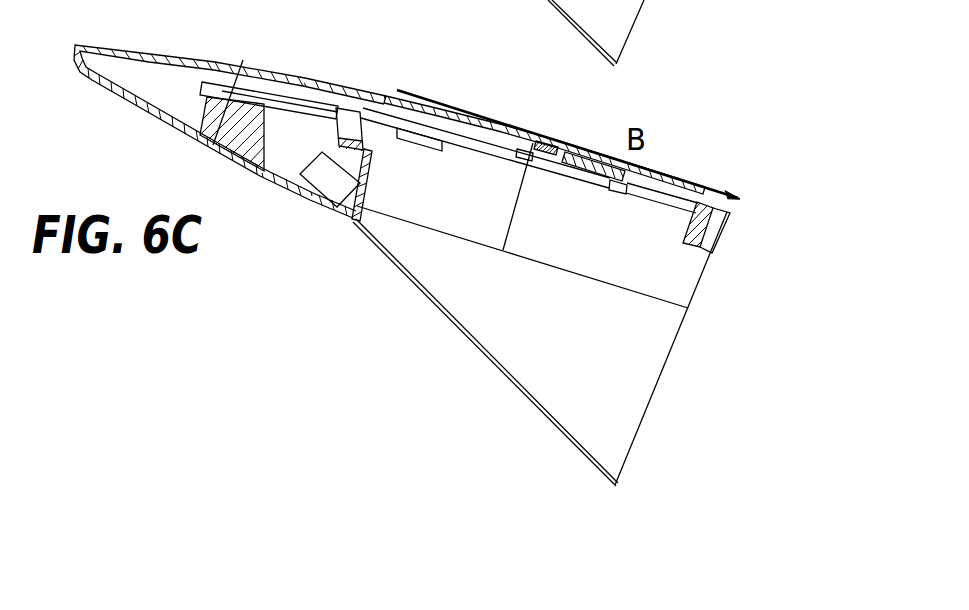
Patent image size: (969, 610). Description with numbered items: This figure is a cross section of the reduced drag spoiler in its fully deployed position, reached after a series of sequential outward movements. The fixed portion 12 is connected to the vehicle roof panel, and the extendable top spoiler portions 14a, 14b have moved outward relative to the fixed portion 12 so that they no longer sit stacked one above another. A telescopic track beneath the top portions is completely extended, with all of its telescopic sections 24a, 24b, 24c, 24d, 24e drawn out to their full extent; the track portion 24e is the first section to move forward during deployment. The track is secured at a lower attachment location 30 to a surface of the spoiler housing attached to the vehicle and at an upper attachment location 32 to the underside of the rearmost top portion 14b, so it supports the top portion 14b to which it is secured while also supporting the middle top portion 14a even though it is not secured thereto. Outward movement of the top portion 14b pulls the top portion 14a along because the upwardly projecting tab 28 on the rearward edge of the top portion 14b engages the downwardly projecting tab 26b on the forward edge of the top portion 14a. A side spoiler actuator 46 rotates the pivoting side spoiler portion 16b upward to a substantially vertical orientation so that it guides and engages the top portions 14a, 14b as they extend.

The fixed portion 12 is at (243, 60).
The extendable top spoiler portion 14a is at (437, 108).
The extendable top spoiler portion 14b is at (605, 160).
The side spoiler portion 16b is at (542, 360).
The telescopic track section 24a is at (237, 62).
The telescopic track section 24b is at (329, 108).
The telescopic track section 24c is at (402, 133).
The telescopic track section 24d is at (483, 150).
The track portion 24e is at (586, 185).
The downwardly projecting tab 26b is at (544, 141).
The upwardly projecting tab 28 is at (533, 153).
The lower attachment location 30 is at (218, 152).
The upper attachment location 32 is at (610, 186).
The side spoiler actuator 46 is at (322, 160).